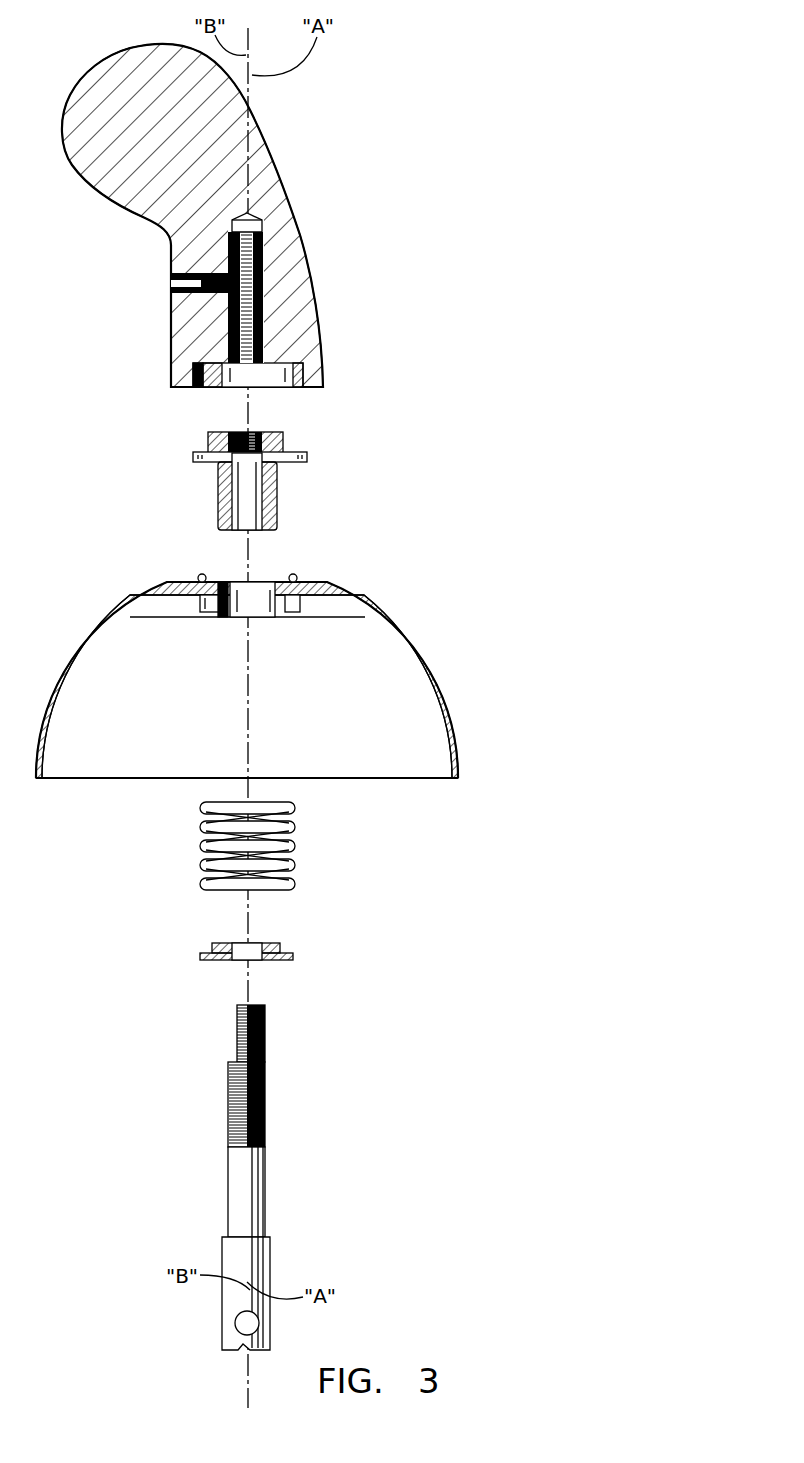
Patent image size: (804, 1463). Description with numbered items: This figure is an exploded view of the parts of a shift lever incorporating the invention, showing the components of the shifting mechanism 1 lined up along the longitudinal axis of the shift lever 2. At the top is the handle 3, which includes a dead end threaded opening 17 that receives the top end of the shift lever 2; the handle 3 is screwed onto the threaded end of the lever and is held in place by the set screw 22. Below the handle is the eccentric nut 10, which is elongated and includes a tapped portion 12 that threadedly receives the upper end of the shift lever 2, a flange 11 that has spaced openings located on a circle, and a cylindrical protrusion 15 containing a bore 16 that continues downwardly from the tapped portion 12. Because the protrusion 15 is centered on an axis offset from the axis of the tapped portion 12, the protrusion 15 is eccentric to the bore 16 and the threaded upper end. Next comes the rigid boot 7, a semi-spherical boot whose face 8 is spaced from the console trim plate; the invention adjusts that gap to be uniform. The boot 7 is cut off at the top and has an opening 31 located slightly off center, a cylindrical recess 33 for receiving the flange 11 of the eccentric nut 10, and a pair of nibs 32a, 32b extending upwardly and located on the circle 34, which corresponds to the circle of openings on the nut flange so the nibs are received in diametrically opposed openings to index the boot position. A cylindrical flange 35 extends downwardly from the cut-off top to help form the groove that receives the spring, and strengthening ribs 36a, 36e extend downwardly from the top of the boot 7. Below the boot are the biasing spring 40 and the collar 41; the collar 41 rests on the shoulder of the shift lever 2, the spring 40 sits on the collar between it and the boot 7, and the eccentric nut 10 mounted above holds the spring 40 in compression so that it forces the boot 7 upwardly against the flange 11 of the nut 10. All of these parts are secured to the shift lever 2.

The shifting mechanism 1 is at (480, 640).
The shift lever 2 is at (267, 1207).
The handle 3 is at (300, 305).
The rigid boot 7 is at (314, 649).
The face of the boot 8 is at (453, 727).
The eccentric nut 10 is at (364, 472).
The flange 11 is at (304, 455).
The tapped portion 12 is at (256, 432).
The cylindrical protrusion 15 is at (277, 512).
The bore 16 is at (262, 500).
The dead end threaded opening 17 is at (268, 255).
The set screw 22 is at (197, 312).
The opening 31 is at (257, 582).
The nib 32a is at (202, 576).
The nib 32b is at (294, 578).
The cylindrical recess 33 is at (192, 612).
The circle 34 is at (230, 607).
The cylindrical flange 35 is at (207, 614).
The strengthening rib 36a is at (165, 608).
The strengthening rib 36e is at (332, 608).
The biasing spring 40 is at (293, 877).
The collar 41 is at (280, 948).